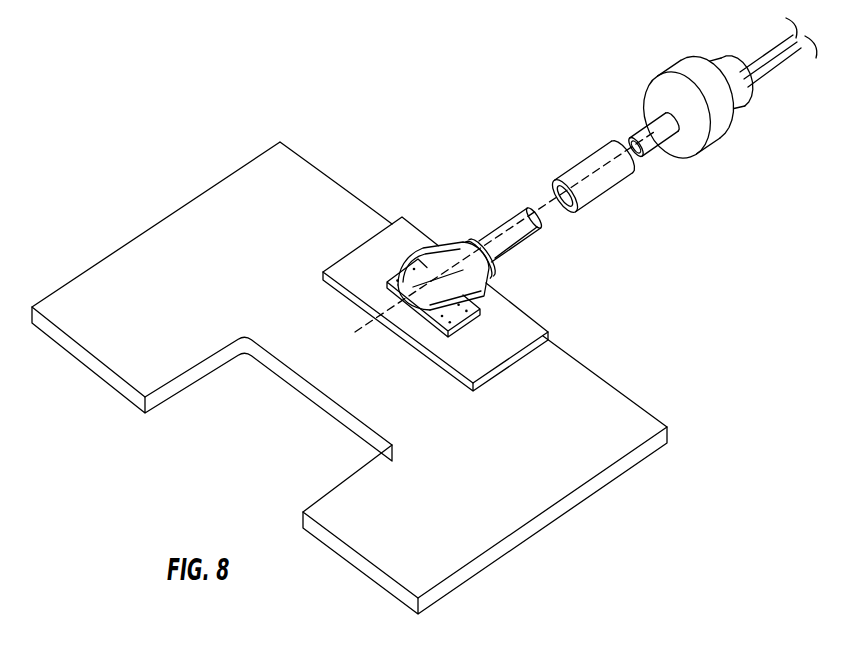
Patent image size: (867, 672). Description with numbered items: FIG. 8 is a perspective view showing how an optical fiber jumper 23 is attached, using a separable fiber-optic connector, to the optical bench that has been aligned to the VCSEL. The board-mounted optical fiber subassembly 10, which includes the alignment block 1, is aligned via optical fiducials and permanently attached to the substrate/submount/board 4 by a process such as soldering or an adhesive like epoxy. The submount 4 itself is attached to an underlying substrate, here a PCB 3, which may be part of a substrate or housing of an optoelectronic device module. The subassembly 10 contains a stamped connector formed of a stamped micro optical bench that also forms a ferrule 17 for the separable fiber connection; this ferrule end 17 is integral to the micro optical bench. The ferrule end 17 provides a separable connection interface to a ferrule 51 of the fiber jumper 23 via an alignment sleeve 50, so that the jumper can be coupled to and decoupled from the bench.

The alignment block 1 is at (486, 291).
The PCB 3 is at (547, 522).
The submount 4 is at (545, 323).
The board-mounted optical fiber subassembly 10 is at (633, 108).
The ferrule 17 is at (515, 215).
The fiber jumper 23 is at (781, 43).
The alignment sleeve 50 is at (603, 189).
The ferrule 51 is at (656, 150).